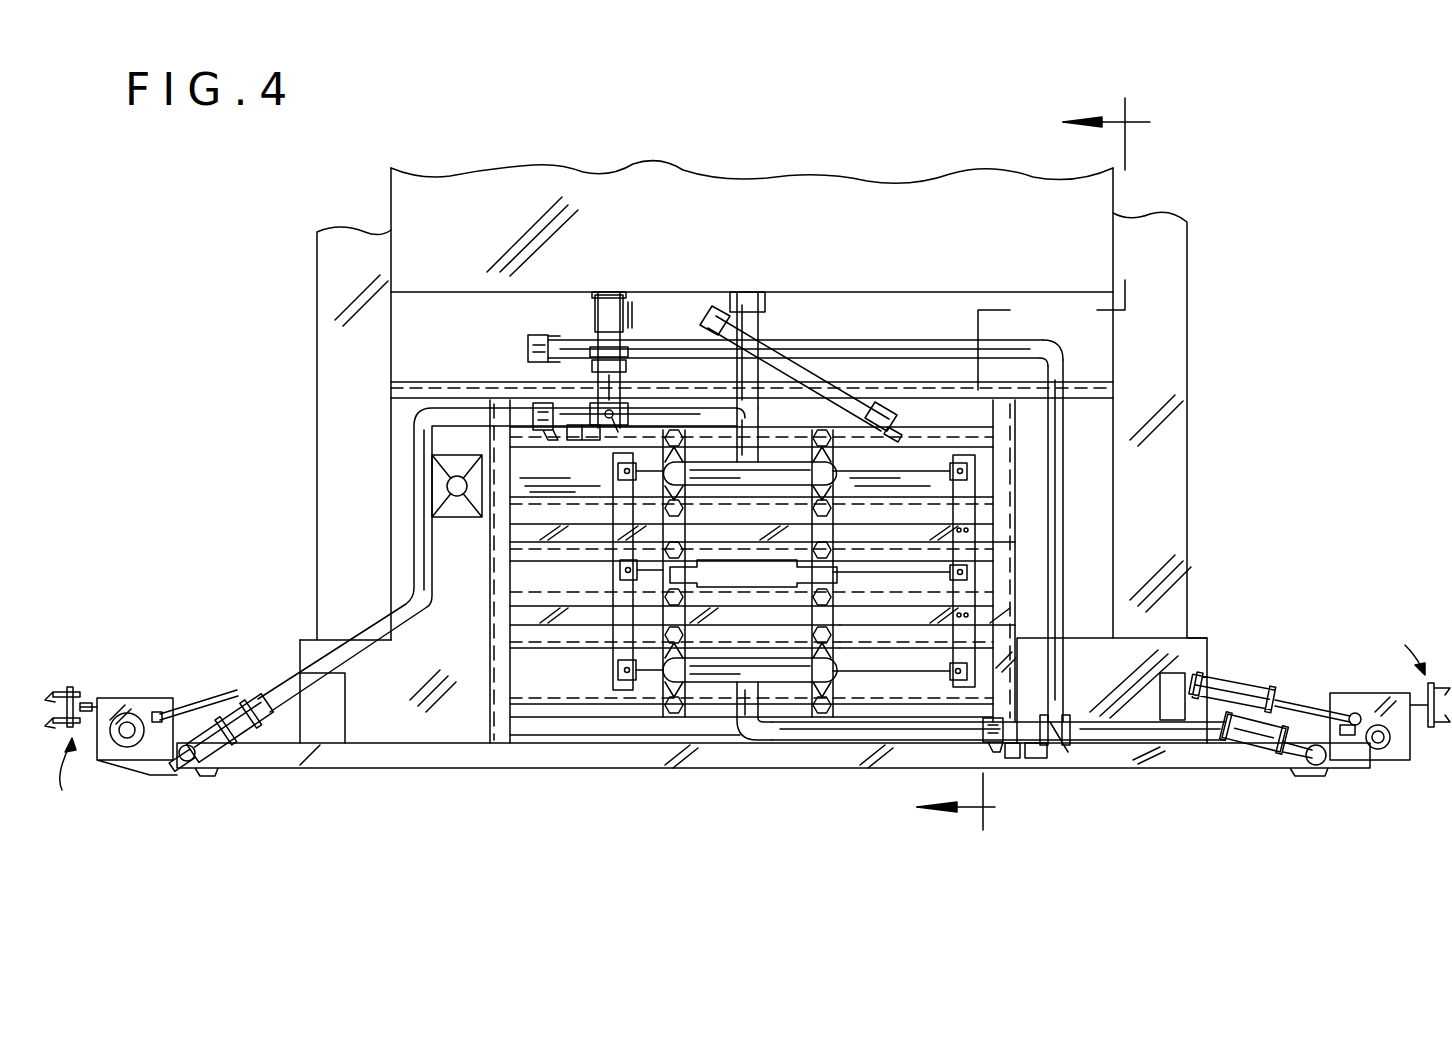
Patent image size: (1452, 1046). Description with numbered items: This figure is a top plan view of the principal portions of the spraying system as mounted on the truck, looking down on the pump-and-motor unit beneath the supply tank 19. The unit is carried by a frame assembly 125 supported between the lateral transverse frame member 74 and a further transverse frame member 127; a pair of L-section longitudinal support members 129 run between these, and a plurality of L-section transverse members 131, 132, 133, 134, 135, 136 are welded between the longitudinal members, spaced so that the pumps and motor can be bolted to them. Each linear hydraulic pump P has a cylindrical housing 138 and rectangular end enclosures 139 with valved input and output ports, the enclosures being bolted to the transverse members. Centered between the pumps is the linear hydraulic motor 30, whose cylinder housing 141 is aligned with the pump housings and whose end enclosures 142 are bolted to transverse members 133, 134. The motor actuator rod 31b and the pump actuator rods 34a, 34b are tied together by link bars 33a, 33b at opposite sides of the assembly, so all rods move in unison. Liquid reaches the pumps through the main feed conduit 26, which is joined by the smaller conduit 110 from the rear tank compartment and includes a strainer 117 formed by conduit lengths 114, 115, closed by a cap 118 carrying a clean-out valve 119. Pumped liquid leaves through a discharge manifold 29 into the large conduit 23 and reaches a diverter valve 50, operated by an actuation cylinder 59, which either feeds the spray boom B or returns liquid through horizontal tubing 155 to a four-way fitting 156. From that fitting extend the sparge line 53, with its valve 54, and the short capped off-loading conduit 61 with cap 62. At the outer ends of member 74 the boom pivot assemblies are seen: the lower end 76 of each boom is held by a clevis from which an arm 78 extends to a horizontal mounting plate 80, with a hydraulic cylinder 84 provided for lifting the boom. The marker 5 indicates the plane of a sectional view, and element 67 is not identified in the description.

The section line 5- 5 is at (1035, 464).
The supply tank 19 is at (822, 162).
The fluid conduit 23 is at (672, 402).
The fluid conduit 26 is at (768, 312).
The discharge manifold 29 is at (800, 462).
The linear hydraulic motor 30 is at (795, 560).
The actuator rod 31b is at (1112, 665).
The link bar 33a is at (512, 627).
The link bar 33b is at (975, 578).
The actuator rod 34a is at (632, 470).
The actuator rod 34b is at (975, 458).
The diverter valve 50 is at (600, 412).
The sparge line 53 is at (612, 300).
The valve 54 is at (630, 320).
The diverter valve actuation cylinder 59 is at (560, 432).
The fluid conduit 61 is at (575, 345).
The cap 62 is at (528, 348).
The junction box 67 is at (435, 487).
The transverse frame member 74 is at (298, 768).
The lower end of the boom 76 is at (58, 690).
The arm 78 is at (88, 705).
The mounting plate 80 is at (145, 698).
The hydraulic cylinder 84 is at (122, 748).
The conduit 110 is at (758, 292).
The first length of conduit 114 is at (805, 358).
The shorter length of conduit 115 is at (710, 318).
The strainer 117 is at (770, 372).
The cap 118 is at (880, 420).
The valve 119 is at (895, 428).
The frame assembly 125 is at (1063, 458).
The frame member 127 is at (422, 385).
The longitudinal support member 129 is at (500, 675).
The transverse member 131 is at (555, 720).
The transverse member 132 is at (520, 648).
The transverse member 133 is at (525, 582).
The transverse member 134 is at (540, 566).
The transverse member 135 is at (540, 512).
The transverse member 136 is at (600, 446).
The cylindrical housing 138 is at (728, 715).
The end enclosure 139 is at (835, 717).
The cylinder housing 141 is at (680, 595).
The end enclosure 142 is at (840, 555).
The horizontal length of tubing 155 is at (596, 385).
The fitting 156 is at (598, 330).
The linear hydraulic pump P is at (735, 440).
The spray boom B is at (70, 774).